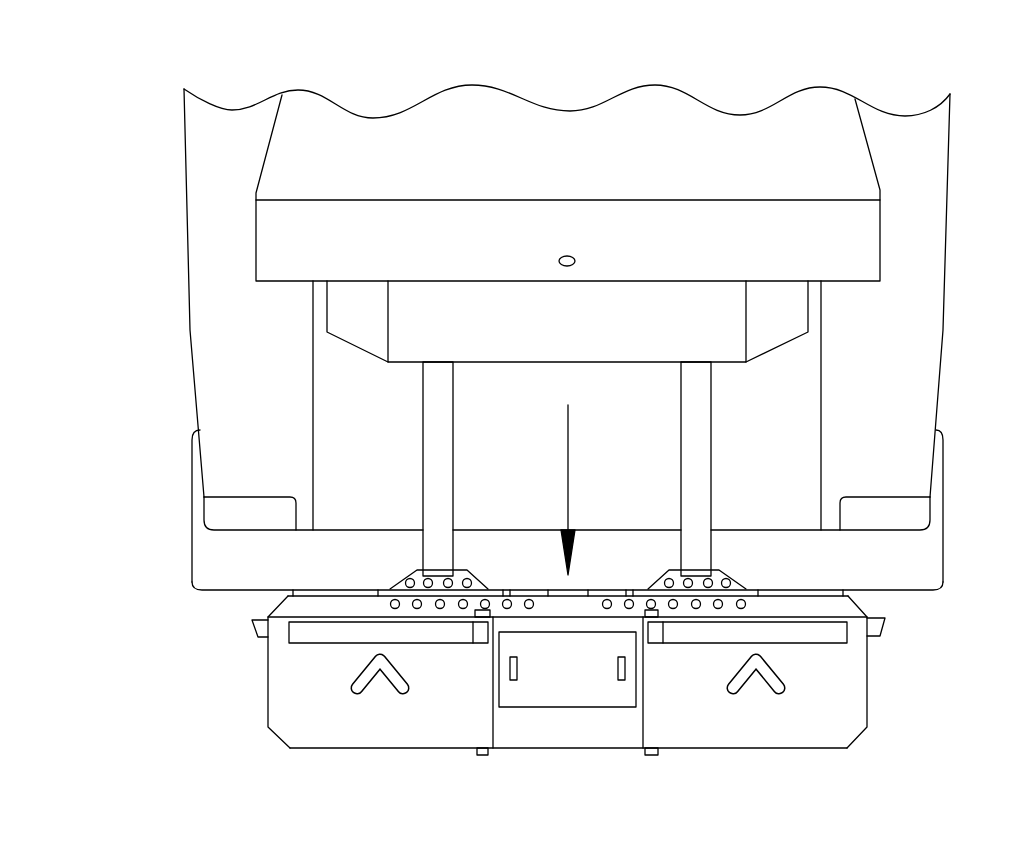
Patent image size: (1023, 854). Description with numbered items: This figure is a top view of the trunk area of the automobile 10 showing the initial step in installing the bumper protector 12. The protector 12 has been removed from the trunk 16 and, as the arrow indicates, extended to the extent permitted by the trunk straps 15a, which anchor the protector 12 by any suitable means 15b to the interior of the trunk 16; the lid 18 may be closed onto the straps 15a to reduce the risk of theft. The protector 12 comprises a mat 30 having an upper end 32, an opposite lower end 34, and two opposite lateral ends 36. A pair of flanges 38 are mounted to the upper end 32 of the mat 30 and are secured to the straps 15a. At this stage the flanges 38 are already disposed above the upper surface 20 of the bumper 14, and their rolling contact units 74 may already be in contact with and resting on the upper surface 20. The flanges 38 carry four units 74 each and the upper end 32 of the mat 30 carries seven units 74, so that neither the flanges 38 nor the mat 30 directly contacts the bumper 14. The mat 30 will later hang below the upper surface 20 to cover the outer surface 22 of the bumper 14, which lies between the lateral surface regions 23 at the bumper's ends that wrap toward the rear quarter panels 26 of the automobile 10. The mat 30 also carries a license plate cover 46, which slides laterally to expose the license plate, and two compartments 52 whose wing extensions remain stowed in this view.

The automobile 10 is at (278, 44).
The bumper protector 12 is at (558, 695).
The bumper 14 is at (208, 567).
The trunk straps 15a is at (440, 425).
The anchoring means 15b is at (578, 333).
The trunk 16 is at (800, 393).
The lid 18 is at (815, 100).
The upper surface 20 is at (932, 568).
The outer surface 22 is at (910, 592).
The lateral surface regions 23 is at (192, 478).
The rear quarter panels 26 is at (205, 323).
The mat 30 is at (568, 697).
The upper end 32 is at (790, 596).
The lower end 34 is at (794, 748).
The lateral ends 36 is at (267, 703).
The flanges 38 is at (407, 582).
The license plate cover 46 is at (558, 693).
The compartments 52 is at (352, 727).
The rolling contact units 74 is at (485, 603).